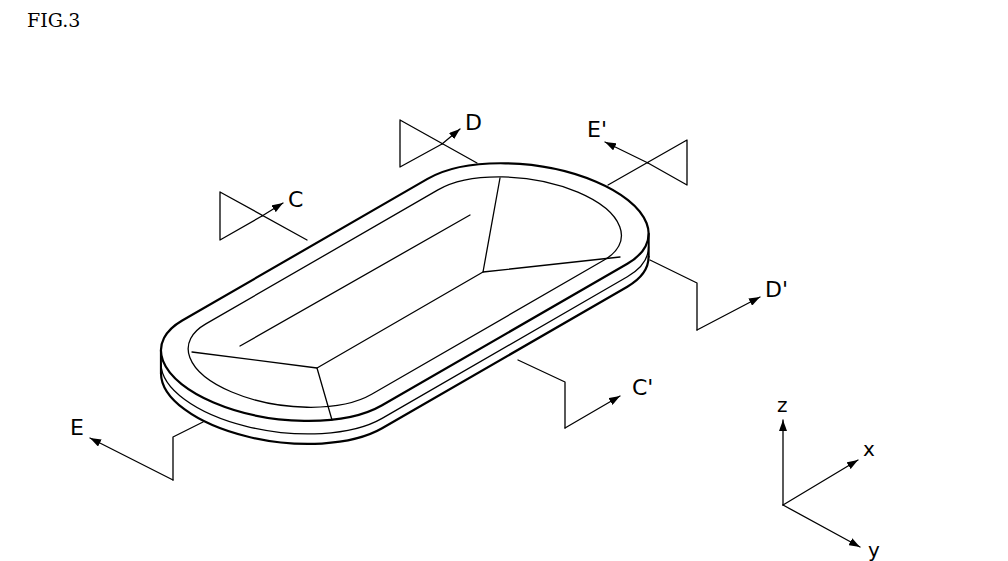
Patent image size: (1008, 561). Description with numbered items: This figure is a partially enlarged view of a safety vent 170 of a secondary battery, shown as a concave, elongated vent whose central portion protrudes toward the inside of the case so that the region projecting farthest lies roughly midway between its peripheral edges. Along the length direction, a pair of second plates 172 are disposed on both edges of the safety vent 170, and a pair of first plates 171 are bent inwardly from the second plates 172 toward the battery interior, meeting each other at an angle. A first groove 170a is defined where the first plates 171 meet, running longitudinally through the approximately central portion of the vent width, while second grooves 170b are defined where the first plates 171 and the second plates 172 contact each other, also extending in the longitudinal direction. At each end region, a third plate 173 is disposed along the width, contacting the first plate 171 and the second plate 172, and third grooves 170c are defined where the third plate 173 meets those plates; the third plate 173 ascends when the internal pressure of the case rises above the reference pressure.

The safety vent 170 is at (527, 128).
The first groove 170a is at (317, 356).
The second groove 170b is at (288, 308).
The third groove 170c is at (228, 352).
The first plate 171 is at (372, 363).
The second plate 172 is at (428, 369).
The third plate 173 is at (292, 411).